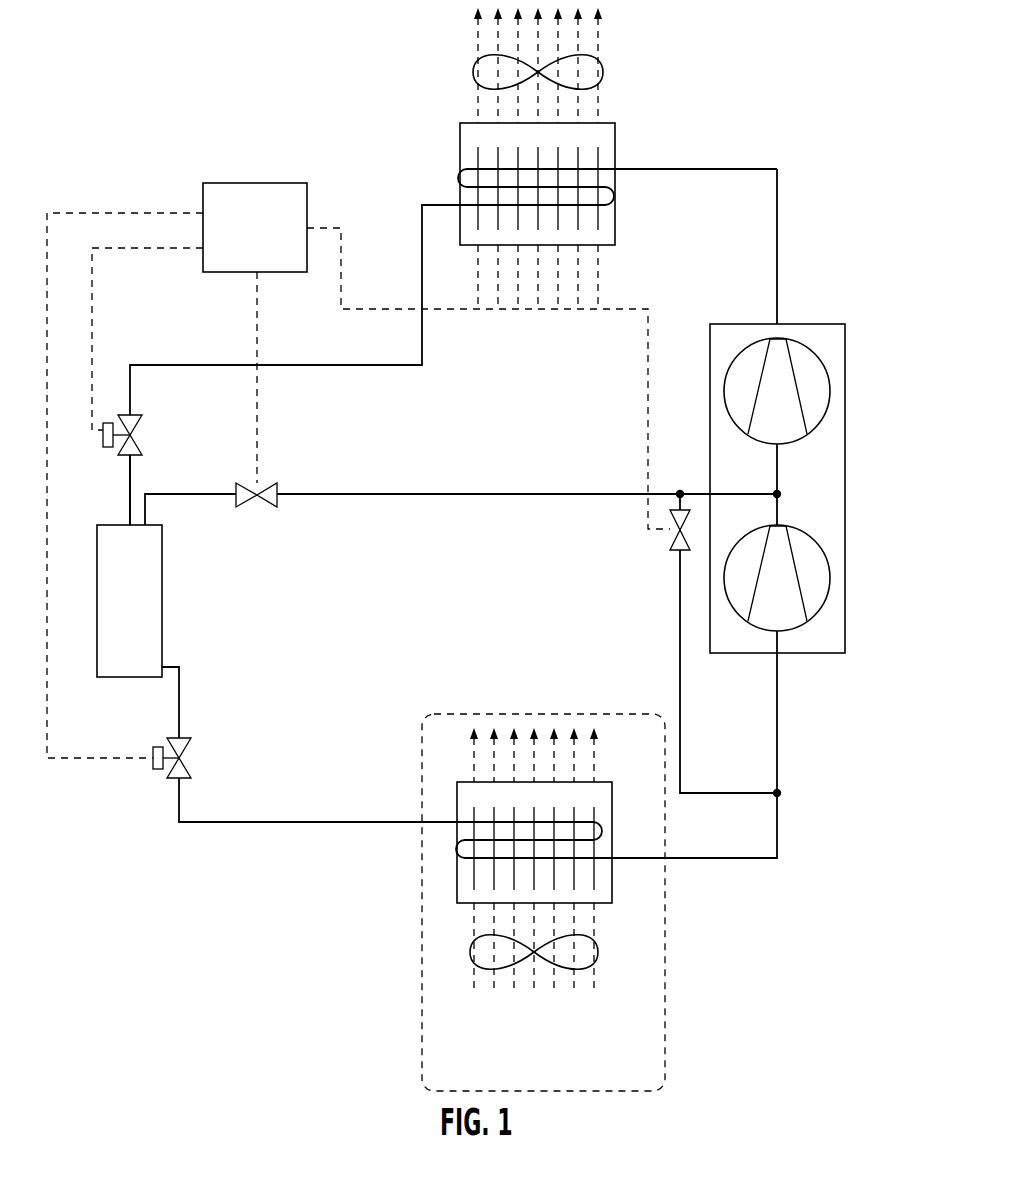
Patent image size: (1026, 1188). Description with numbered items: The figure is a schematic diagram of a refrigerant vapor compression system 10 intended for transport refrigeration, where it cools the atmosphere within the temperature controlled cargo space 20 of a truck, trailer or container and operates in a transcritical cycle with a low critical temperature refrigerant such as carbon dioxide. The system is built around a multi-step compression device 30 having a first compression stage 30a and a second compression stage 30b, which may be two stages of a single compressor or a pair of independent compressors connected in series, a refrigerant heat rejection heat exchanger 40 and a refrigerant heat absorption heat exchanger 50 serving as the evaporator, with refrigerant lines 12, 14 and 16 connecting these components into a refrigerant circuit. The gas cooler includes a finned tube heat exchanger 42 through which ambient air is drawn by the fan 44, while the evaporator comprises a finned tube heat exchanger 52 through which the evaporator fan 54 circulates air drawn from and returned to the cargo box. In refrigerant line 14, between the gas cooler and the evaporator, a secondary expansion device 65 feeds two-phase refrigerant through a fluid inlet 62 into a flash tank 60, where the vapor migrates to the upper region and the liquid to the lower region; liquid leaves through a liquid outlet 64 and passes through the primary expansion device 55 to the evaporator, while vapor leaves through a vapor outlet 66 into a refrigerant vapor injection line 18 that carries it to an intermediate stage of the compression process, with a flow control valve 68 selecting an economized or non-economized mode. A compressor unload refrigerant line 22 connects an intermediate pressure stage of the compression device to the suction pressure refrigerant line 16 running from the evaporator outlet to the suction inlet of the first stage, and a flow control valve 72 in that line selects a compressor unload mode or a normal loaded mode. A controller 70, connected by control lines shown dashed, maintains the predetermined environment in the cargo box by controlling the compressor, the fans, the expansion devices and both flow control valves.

The refrigerant vapor compression system 10 is at (783, 127).
The refrigerant line 12 is at (735, 169).
The refrigerant line 14 is at (422, 232).
The refrigerant line 16 is at (778, 824).
The refrigerant vapor injection line 18 is at (365, 494).
The temperature controlled cargo space 20 is at (665, 1035).
The compressor unload refrigerant line 22 is at (681, 641).
The multi-step compression device 30 is at (845, 370).
The first compression stage 30a is at (830, 601).
The second compression stage 30b is at (830, 415).
The refrigerant heat rejection heat exchanger 40 is at (615, 140).
The finned tube heat exchanger 42 is at (605, 205).
The fan 44 is at (602, 74).
The refrigerant heat absorption heat exchanger 50 is at (612, 884).
The finned tube heat exchanger 52 is at (600, 830).
The evaporator fan 54 is at (598, 952).
The primary expansion device 55 is at (176, 778).
The flash tank 60 is at (162, 560).
The fluid inlet 62 is at (129, 516).
The liquid outlet 64 is at (178, 667).
The secondary expansion device 65 is at (142, 435).
The vapor outlet 66 is at (145, 509).
The flow control valve 68 is at (258, 507).
The controller 70 is at (268, 183).
The flow control valve 72 is at (670, 536).